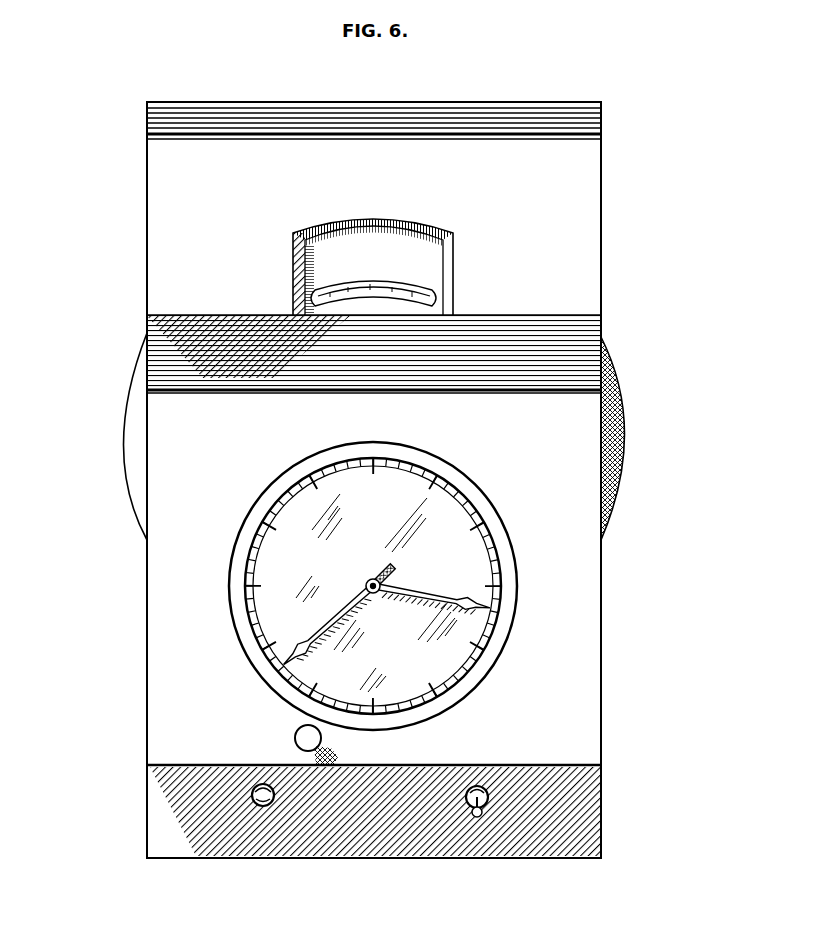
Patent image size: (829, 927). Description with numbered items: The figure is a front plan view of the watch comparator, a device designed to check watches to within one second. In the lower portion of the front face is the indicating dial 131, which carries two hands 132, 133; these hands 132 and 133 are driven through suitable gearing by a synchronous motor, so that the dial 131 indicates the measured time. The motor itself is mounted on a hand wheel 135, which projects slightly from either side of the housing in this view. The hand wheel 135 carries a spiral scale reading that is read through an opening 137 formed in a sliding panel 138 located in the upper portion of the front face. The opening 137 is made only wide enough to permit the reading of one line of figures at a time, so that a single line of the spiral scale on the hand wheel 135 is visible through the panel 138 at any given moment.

The dial 131 is at (468, 547).
The hand 132 is at (280, 666).
The hand 133 is at (473, 600).
The hand wheel 135 is at (130, 453).
The opening 137 is at (430, 302).
The sliding panel 138 is at (420, 258).